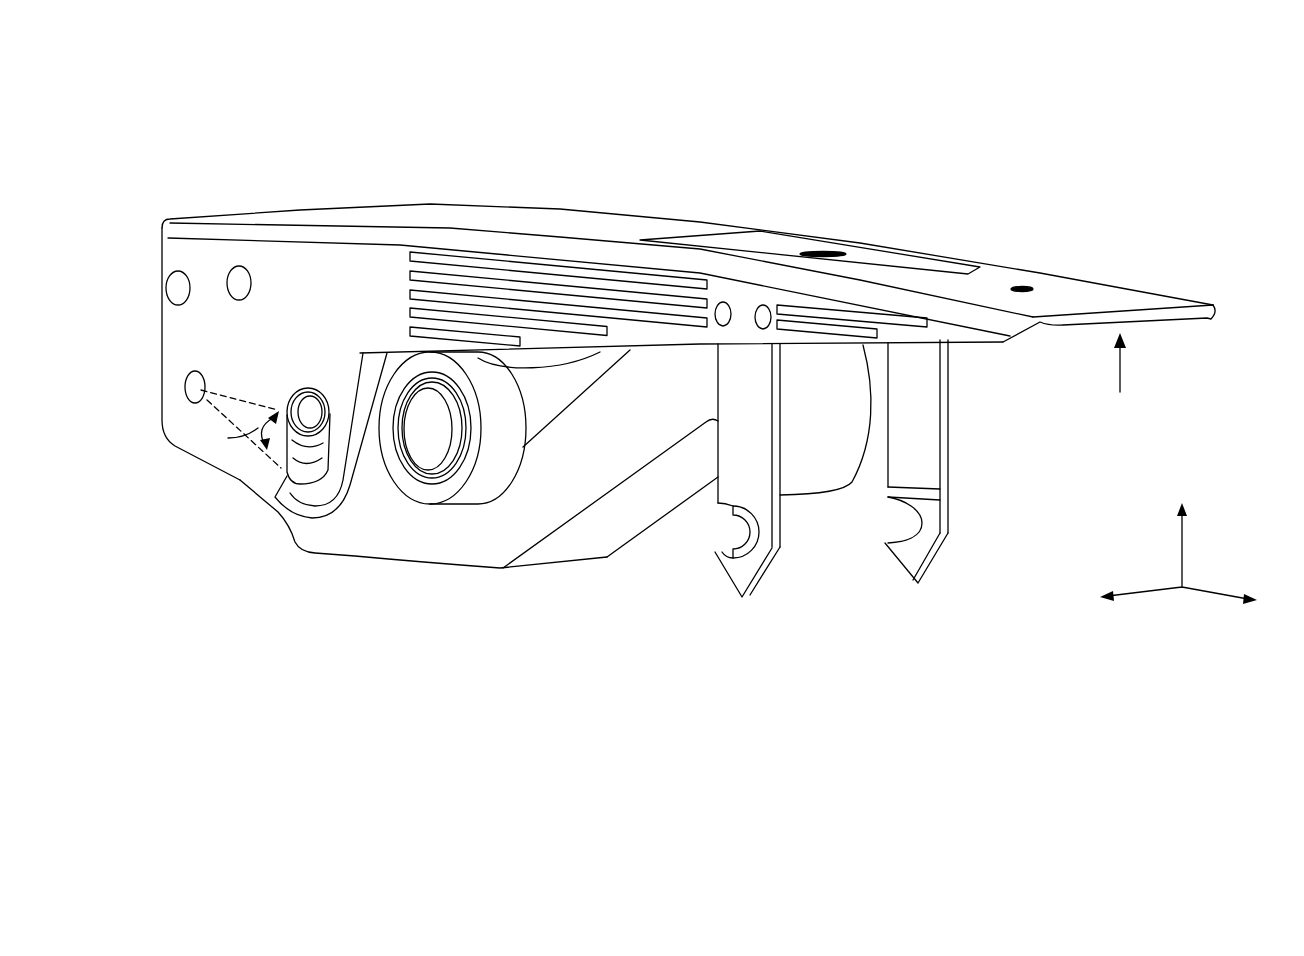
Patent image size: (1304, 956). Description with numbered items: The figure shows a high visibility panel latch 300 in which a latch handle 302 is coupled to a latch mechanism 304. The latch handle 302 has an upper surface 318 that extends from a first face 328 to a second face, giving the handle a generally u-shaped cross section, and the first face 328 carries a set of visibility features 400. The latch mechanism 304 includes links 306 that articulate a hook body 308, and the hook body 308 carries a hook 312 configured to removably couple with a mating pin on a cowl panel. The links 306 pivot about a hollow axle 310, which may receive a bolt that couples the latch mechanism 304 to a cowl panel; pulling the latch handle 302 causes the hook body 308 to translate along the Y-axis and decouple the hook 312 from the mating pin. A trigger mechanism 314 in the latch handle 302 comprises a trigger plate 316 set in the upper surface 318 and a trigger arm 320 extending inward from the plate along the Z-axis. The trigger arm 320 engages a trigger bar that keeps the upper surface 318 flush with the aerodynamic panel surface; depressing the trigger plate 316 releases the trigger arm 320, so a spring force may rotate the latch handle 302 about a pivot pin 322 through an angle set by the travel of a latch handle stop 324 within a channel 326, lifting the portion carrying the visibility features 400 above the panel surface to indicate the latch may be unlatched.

The high visibility panel latch 300 is at (1020, 146).
The latch handle 302 is at (1060, 224).
The latch mechanism 304 is at (204, 502).
The links 306 is at (430, 493).
The hook body 308 is at (560, 502).
The hollow axle 310 is at (430, 424).
The hook 312 is at (808, 482).
The trigger mechanism 314 is at (992, 379).
The trigger plate 316 is at (889, 260).
The upper surface 318 is at (1120, 297).
The trigger arm 320 is at (934, 466).
The pivot pin 322 is at (196, 371).
The latch handle stop 324 is at (300, 398).
The channel 326 is at (272, 503).
The first face 328 is at (314, 332).
The visibility features 400 is at (392, 288).